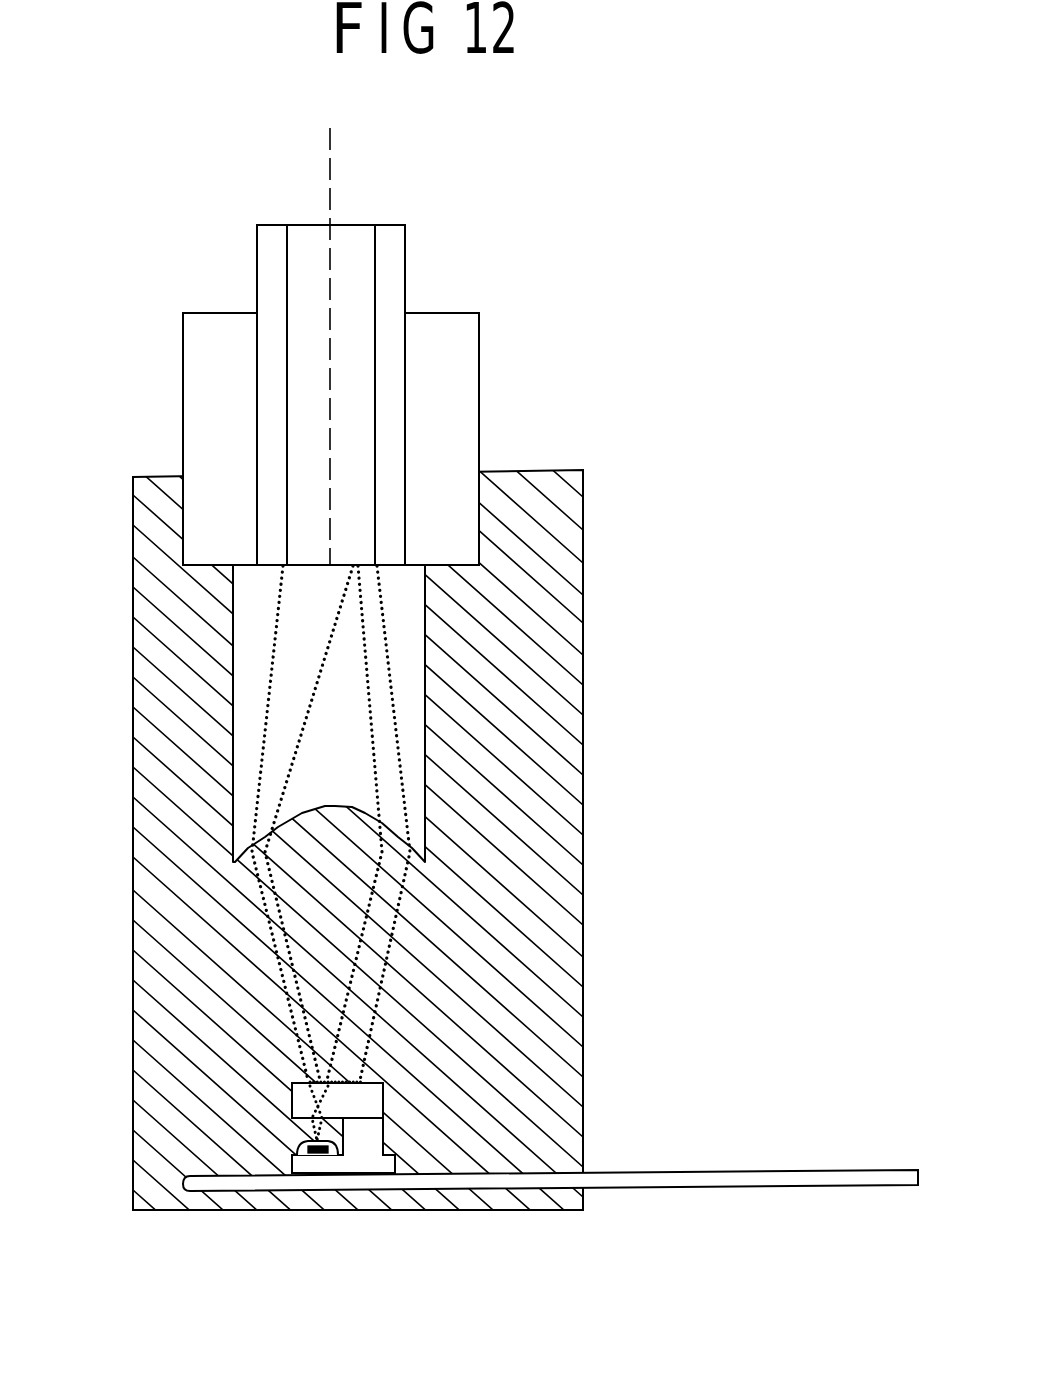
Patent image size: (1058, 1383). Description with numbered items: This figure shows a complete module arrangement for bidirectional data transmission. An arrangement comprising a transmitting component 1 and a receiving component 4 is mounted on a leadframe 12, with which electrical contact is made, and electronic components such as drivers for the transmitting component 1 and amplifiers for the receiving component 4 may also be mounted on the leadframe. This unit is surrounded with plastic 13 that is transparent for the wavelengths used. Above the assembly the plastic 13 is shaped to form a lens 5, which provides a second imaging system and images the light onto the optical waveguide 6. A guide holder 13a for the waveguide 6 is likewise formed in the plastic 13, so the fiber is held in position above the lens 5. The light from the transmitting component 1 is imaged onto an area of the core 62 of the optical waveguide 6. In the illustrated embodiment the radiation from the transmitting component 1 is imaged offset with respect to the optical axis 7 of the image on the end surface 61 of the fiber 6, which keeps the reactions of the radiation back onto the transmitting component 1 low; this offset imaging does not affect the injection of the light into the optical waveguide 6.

The transmitting component 1 is at (307, 1143).
The receiving component 4 is at (372, 1080).
The lens 5 is at (337, 825).
The optical waveguide 6 is at (405, 257).
The optical axis 7 is at (328, 167).
The leadframe 12 is at (768, 1178).
The plastic 13 is at (572, 933).
The guide holder 13a is at (482, 470).
The end surface 61 is at (307, 566).
The core 62 is at (345, 235).